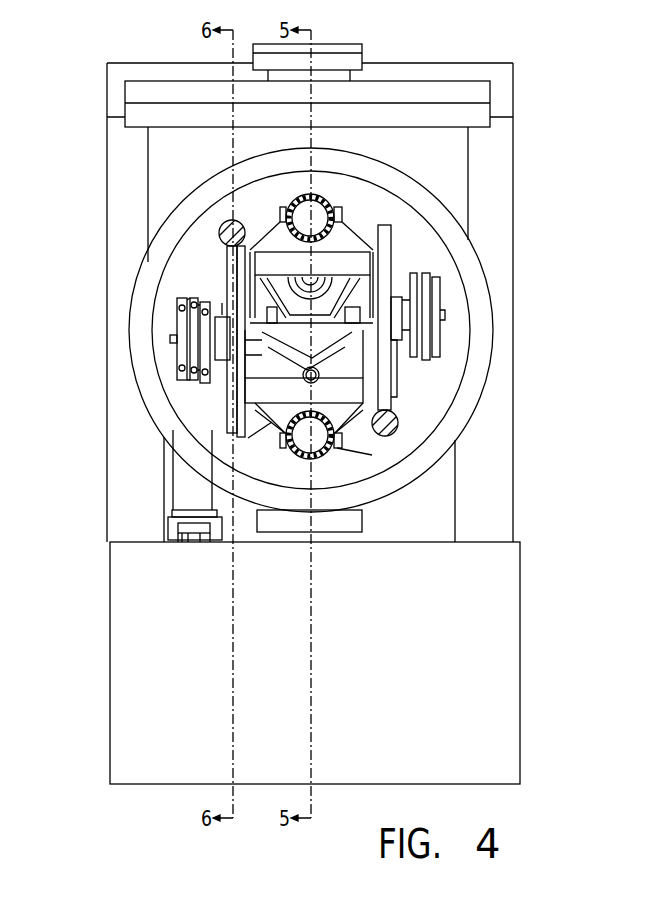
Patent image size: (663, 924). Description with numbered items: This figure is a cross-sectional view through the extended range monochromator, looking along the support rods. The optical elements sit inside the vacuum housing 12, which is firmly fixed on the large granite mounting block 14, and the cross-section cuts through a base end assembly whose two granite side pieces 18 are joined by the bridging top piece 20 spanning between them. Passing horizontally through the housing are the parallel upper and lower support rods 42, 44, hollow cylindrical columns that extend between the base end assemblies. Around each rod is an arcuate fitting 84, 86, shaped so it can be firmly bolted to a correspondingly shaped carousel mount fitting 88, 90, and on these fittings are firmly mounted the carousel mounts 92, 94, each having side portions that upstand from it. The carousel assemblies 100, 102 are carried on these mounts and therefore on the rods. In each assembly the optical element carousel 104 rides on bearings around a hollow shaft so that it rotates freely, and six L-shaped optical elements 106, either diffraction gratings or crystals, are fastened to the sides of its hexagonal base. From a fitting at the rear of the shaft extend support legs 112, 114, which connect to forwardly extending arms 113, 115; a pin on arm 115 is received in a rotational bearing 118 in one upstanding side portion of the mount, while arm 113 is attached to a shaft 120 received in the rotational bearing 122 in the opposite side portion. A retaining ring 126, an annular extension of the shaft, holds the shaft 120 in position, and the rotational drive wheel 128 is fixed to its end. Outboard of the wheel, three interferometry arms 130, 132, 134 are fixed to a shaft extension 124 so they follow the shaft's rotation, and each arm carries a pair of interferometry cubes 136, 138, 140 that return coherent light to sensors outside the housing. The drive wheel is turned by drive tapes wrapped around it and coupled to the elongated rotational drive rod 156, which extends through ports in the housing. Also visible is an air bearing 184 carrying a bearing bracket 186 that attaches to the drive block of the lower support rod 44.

The vacuum housing 12 is at (493, 298).
The mounting block 14 is at (520, 597).
The side pieces 18 is at (107, 197).
The bridging top piece 20 is at (125, 105).
The upper support rod 42 is at (318, 201).
The lower support rod 44 is at (318, 459).
The arcuate fitting 84 is at (284, 207).
The arcuate fitting 86 is at (342, 448).
The carousel mount fitting 88 is at (352, 238).
The carousel mount fitting 90 is at (292, 450).
The carousel mount 92 is at (260, 250).
The carousel mount 94 is at (275, 405).
The carousel assembly 100 is at (385, 226).
The carousel assembly 102 is at (367, 370).
The optical element carousel 104 is at (356, 370).
The optical elements 106 is at (368, 283).
The support leg 112 is at (277, 318).
The arm 113 is at (345, 318).
The support leg 114 is at (256, 283).
The arm 115 is at (232, 315).
The rotational bearing 118 is at (228, 305).
The shaft 120 is at (270, 373).
The rotational bearing 122 is at (228, 412).
The shaft extension 124 is at (170, 340).
The retaining ring 126 is at (262, 378).
The rotational drive wheel 128 is at (280, 440).
The interferometry arm 130 is at (200, 352).
The interferometry arm 132 is at (188, 320).
The interferometry arm 134 is at (210, 385).
The interferometry cubes 136 is at (177, 300).
The interferometry cubes 138 is at (190, 305).
The interferometry cubes 140 is at (215, 296).
The rotational drive rod 156 is at (234, 221).
The air bearing 184 is at (168, 523).
The bearing bracket 186 is at (183, 542).